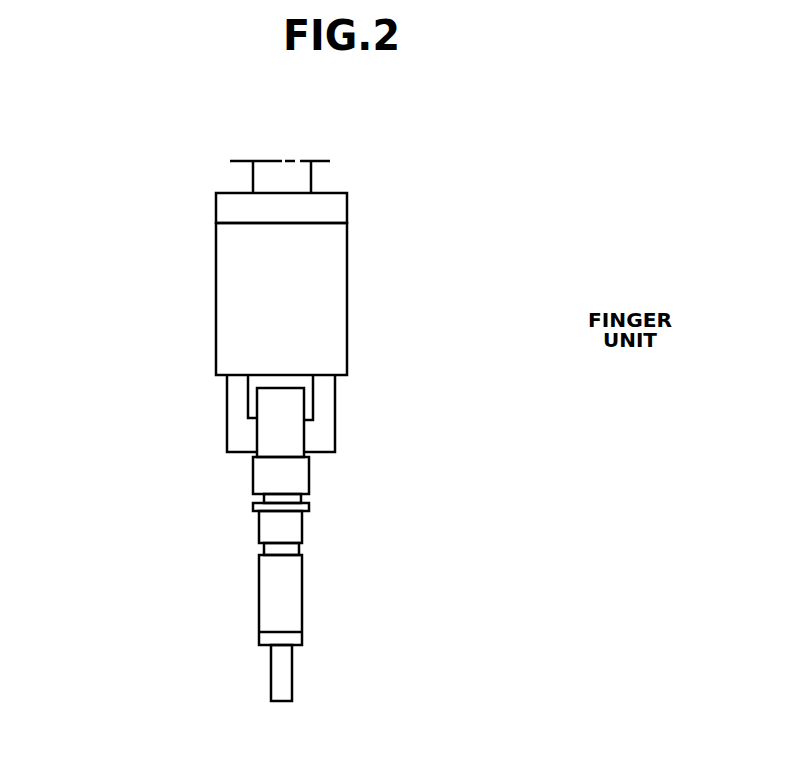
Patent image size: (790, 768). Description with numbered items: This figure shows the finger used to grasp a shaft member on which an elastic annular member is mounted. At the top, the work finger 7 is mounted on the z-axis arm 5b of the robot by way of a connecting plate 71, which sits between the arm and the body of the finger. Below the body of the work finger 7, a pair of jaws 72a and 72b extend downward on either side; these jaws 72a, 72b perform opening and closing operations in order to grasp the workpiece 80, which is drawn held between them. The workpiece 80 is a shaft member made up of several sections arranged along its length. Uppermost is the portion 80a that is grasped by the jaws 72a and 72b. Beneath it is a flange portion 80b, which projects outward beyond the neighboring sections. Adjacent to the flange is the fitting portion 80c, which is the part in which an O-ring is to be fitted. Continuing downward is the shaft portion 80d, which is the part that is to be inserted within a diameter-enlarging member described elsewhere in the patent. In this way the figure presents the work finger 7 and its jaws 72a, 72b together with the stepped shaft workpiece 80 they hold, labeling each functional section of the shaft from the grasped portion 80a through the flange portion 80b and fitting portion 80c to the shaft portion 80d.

The z-axis arm 5b is at (294, 182).
The connecting plate 71 is at (330, 215).
The work finger 7 is at (330, 305).
The jaw 72a is at (238, 400).
The jaw 72b is at (322, 432).
The workpiece 80 is at (263, 544).
The portion to be grasped 80a is at (268, 443).
The flange portion 80b is at (252, 508).
The fitting portion 80c is at (300, 499).
The shaft portion 80d is at (285, 572).